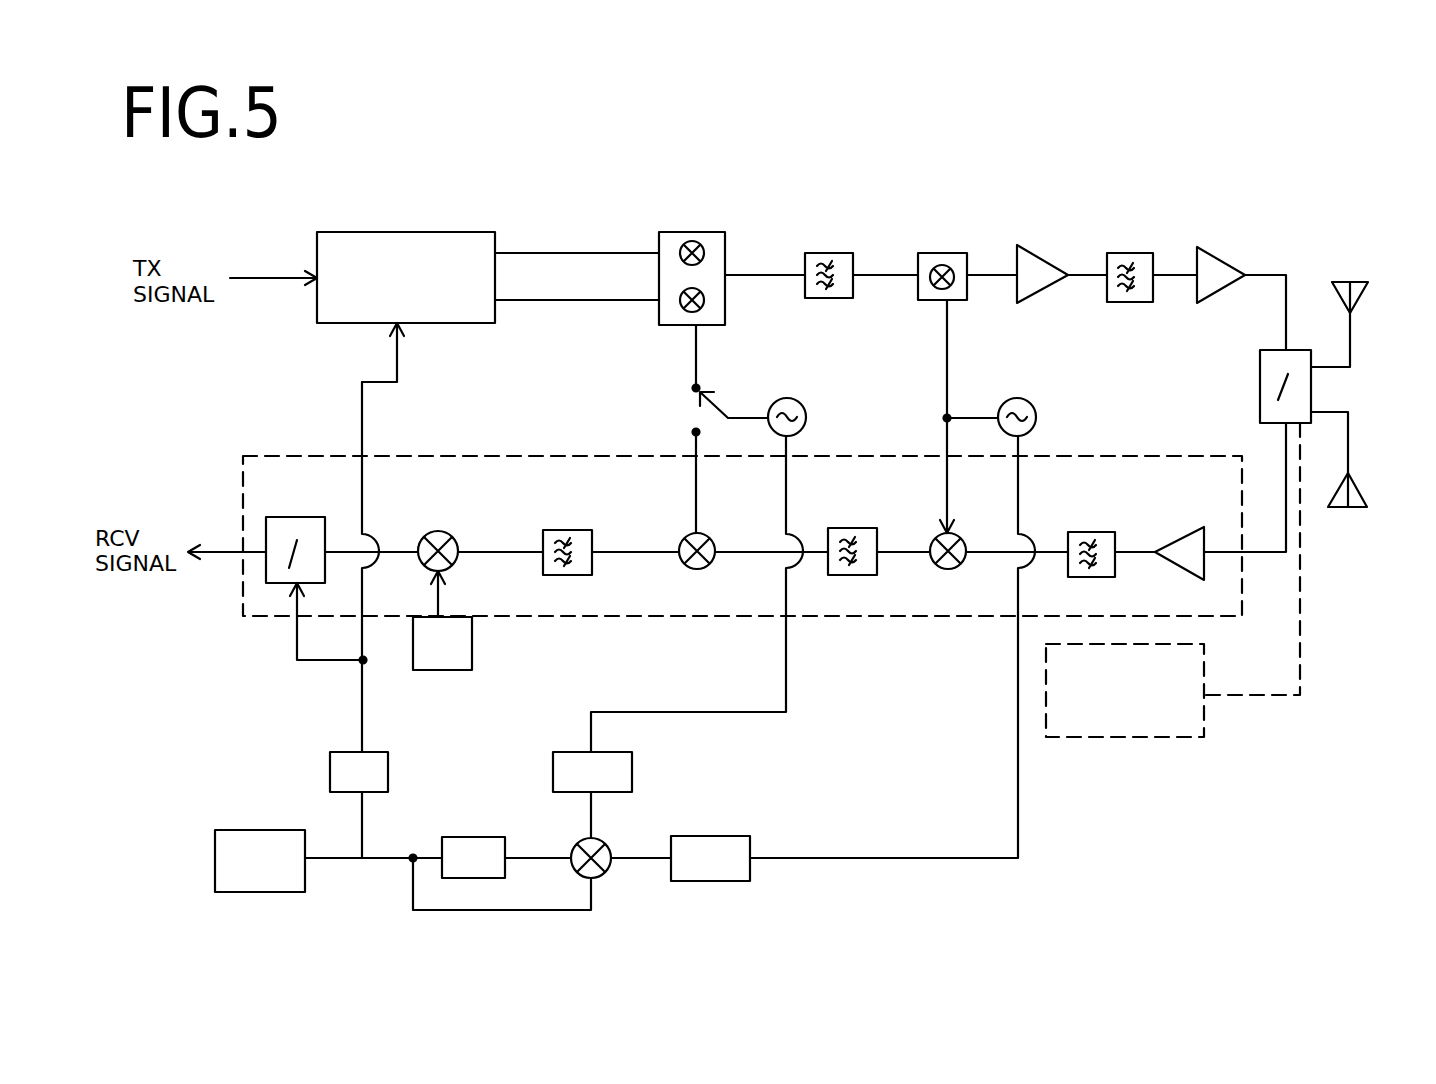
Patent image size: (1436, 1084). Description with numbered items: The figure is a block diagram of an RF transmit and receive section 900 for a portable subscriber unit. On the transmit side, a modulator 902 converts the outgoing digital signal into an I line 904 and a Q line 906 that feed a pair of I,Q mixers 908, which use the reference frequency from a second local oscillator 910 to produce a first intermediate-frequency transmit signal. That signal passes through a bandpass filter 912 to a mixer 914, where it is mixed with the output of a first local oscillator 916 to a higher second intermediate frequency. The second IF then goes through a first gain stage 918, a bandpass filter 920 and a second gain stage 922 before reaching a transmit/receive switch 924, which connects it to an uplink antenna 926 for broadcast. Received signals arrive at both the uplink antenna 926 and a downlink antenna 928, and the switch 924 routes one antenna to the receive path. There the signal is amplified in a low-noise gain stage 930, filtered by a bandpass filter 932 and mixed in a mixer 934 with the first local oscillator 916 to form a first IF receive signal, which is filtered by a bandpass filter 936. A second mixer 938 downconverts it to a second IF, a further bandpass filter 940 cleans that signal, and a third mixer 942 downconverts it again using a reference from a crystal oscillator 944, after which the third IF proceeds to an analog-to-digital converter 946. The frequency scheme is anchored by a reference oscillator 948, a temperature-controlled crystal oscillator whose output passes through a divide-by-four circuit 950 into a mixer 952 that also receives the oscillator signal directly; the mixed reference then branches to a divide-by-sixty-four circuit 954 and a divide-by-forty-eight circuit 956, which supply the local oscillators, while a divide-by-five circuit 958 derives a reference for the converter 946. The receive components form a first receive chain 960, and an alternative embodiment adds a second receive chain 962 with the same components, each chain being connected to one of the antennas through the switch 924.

The RF transmit and receive section 900 is at (894, 163).
The modulator 902 is at (417, 232).
The I line 904 is at (555, 253).
The Q line 906 is at (543, 300).
The pair of I,Q mixers 908 is at (687, 232).
The second local oscillator (LO2) 910 is at (790, 398).
The bandpass filter 912 is at (827, 253).
The mixer 914 is at (935, 253).
The first local oscillator (LO1) 916 is at (1022, 398).
The first gain stage 918 is at (1037, 248).
The bandpass filter 920 is at (1127, 253).
The second gain stage 922 is at (1220, 257).
The transmit/receive (T/R) switch 924 is at (1260, 388).
The uplink antenna 926 is at (1357, 282).
The downlink antenna 928 is at (1358, 490).
The gain stage 930 is at (1182, 528).
The bandpass filter 932 is at (1108, 500).
The mixer 934 is at (943, 568).
The bandpass filter 936 is at (850, 528).
The second mixer 938 is at (690, 570).
The bandpass filter 940 is at (565, 575).
The third mixer 942 is at (447, 537).
The crystal oscillator 944 is at (472, 633).
The analog-to-digital (A/D) converter 946 is at (295, 517).
The reference oscillator (TCXO) 948 is at (262, 830).
The divide-by-four circuit 950 is at (482, 837).
The mixer 952 is at (607, 872).
The divide-by-64 circuit 954 is at (710, 836).
The divide-by-48 circuit 956 is at (632, 778).
The divide-by-five circuit 958 is at (330, 765).
The first receive chain 960 is at (1050, 455).
The second receive chain 962 is at (1197, 719).